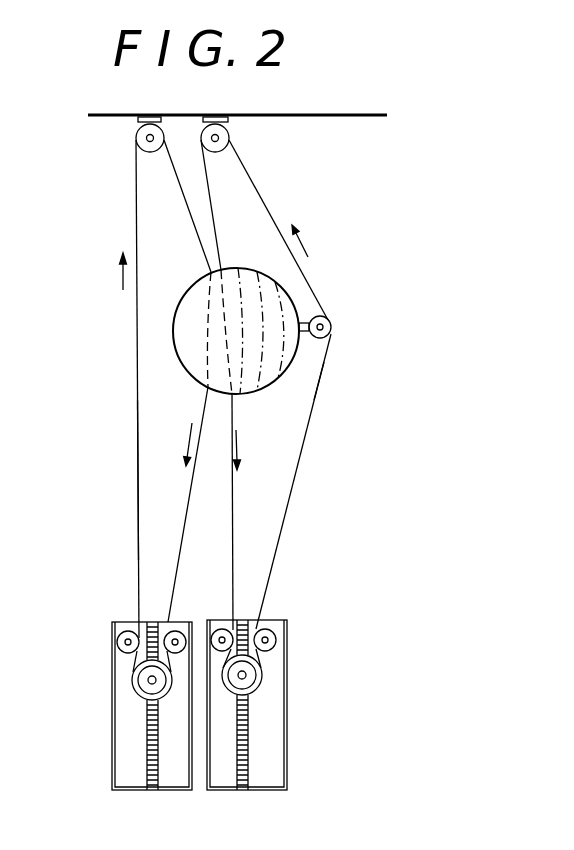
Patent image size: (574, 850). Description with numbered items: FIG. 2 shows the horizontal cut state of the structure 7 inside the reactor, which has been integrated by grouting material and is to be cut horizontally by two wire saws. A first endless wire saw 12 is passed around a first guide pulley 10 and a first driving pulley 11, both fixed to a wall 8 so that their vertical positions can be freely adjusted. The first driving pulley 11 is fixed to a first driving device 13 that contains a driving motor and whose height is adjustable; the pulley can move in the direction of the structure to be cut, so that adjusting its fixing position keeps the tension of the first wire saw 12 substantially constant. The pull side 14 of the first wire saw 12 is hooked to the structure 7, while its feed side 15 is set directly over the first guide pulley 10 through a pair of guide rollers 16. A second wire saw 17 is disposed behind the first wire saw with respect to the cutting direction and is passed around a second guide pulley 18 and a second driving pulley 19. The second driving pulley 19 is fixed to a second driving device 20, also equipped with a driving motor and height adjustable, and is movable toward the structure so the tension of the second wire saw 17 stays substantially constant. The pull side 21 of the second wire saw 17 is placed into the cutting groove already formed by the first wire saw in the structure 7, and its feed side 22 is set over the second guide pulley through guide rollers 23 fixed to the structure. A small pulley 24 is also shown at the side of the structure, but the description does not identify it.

The structure inside the reactor 7 is at (183, 377).
The wall 8 is at (362, 113).
The first guide pulley 10 is at (134, 138).
The first driving pulley 11 is at (132, 680).
The first endless wire saw 12 is at (130, 480).
The first driving device 13 is at (119, 739).
The pull side 14 is at (180, 544).
The feed side 15 is at (137, 537).
The guide rollers 16 is at (166, 632).
The second wire saw 17 is at (320, 410).
The second guide pulley 18 is at (233, 138).
The second driving pulley 19 is at (262, 675).
The second driving device 20 is at (281, 743).
The pull side 21 is at (240, 470).
The feed side 22 is at (297, 471).
The guide rollers 23 is at (222, 631).
The pulley 24 is at (333, 322).